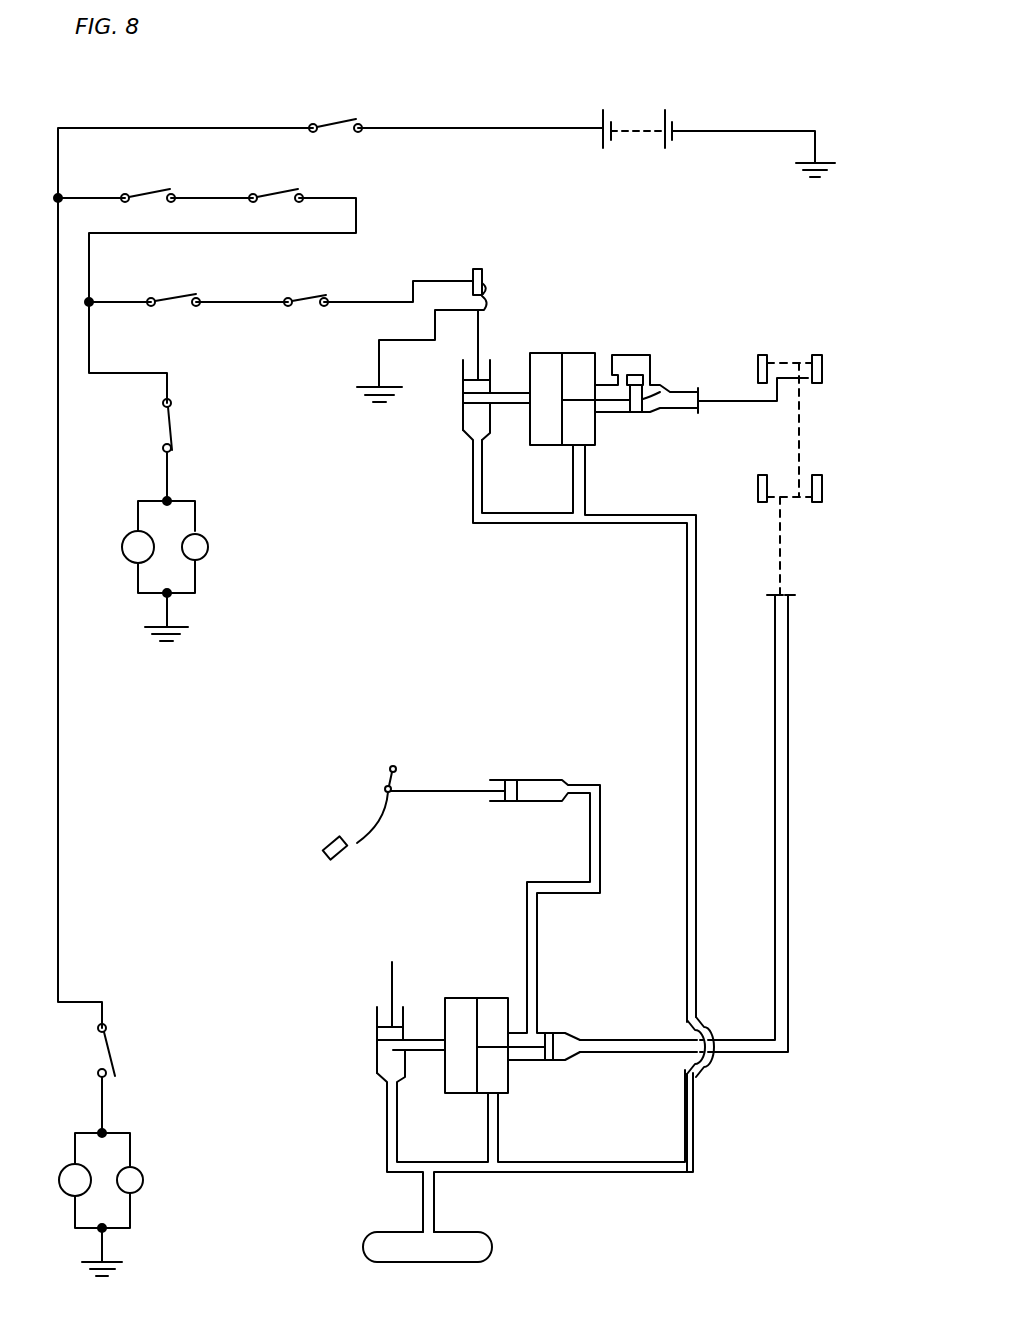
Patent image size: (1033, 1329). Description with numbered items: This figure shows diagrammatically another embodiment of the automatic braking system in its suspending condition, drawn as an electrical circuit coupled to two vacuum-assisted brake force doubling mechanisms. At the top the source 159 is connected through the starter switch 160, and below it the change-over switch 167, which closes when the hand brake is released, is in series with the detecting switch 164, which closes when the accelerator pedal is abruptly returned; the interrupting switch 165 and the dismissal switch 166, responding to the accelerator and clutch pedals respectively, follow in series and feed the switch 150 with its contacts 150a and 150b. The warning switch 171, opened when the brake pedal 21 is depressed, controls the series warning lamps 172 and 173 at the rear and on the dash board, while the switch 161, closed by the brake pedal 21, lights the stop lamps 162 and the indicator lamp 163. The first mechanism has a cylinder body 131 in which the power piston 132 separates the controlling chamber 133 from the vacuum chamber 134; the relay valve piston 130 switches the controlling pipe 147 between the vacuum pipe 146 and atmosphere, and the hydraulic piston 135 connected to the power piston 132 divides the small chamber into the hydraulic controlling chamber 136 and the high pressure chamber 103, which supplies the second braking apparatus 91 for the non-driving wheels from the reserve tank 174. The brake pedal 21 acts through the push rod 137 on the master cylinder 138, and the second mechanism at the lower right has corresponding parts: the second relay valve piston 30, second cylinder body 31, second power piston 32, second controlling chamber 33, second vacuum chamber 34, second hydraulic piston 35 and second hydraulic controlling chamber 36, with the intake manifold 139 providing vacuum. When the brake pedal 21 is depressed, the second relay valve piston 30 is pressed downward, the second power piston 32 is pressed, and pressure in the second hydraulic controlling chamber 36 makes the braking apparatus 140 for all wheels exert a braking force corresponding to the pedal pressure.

The brake pedal 21 is at (330, 842).
The second relay valve piston 30 is at (392, 1050).
The second cylinder body 31 is at (468, 998).
The second power piston 32 is at (475, 1072).
The second controlling chamber 33 is at (450, 1010).
The second vacuum chamber 34 is at (493, 1012).
The second hydraulic piston 35 is at (560, 1040).
The second hydraulic controlling chamber 36 is at (527, 1063).
The second braking apparatus 91 is at (786, 390).
The high pressure chamber 103 is at (660, 394).
The relay valve piston 130 is at (478, 396).
The cylinder body 131 is at (528, 370).
The power piston 132 is at (560, 430).
The controlling chamber 133 is at (548, 364).
The vacuum chamber 134 is at (590, 364).
The hydraulic piston 135 is at (648, 406).
The hydraulic controlling chamber 136 is at (608, 414).
The push rod 137 is at (525, 782).
The master cylinder 138 is at (492, 778).
The intake manifold 139 is at (363, 1247).
The braking apparatus 140 is at (777, 502).
The vacuum pipe 146 is at (590, 488).
The controlling pipe 147 is at (512, 408).
The switch 150 is at (490, 262).
The switch contact 150a is at (488, 291).
The switch contact 150b is at (488, 273).
The source 159 is at (630, 128).
The switch 160 is at (333, 122).
The switch 161 is at (127, 1050).
The stop lamps 162 is at (62, 1190).
The indicator lamp 163 is at (145, 1189).
The detecting switch 164 is at (283, 195).
The interrupting switch 165 is at (180, 299).
The dismissal switch 166 is at (308, 299).
The change-over switch 167 is at (150, 195).
The warning switch 171 is at (146, 425).
The warning lamp 172 is at (125, 558).
The warning lamp 173 is at (208, 556).
The reserve tank 174 is at (632, 354).